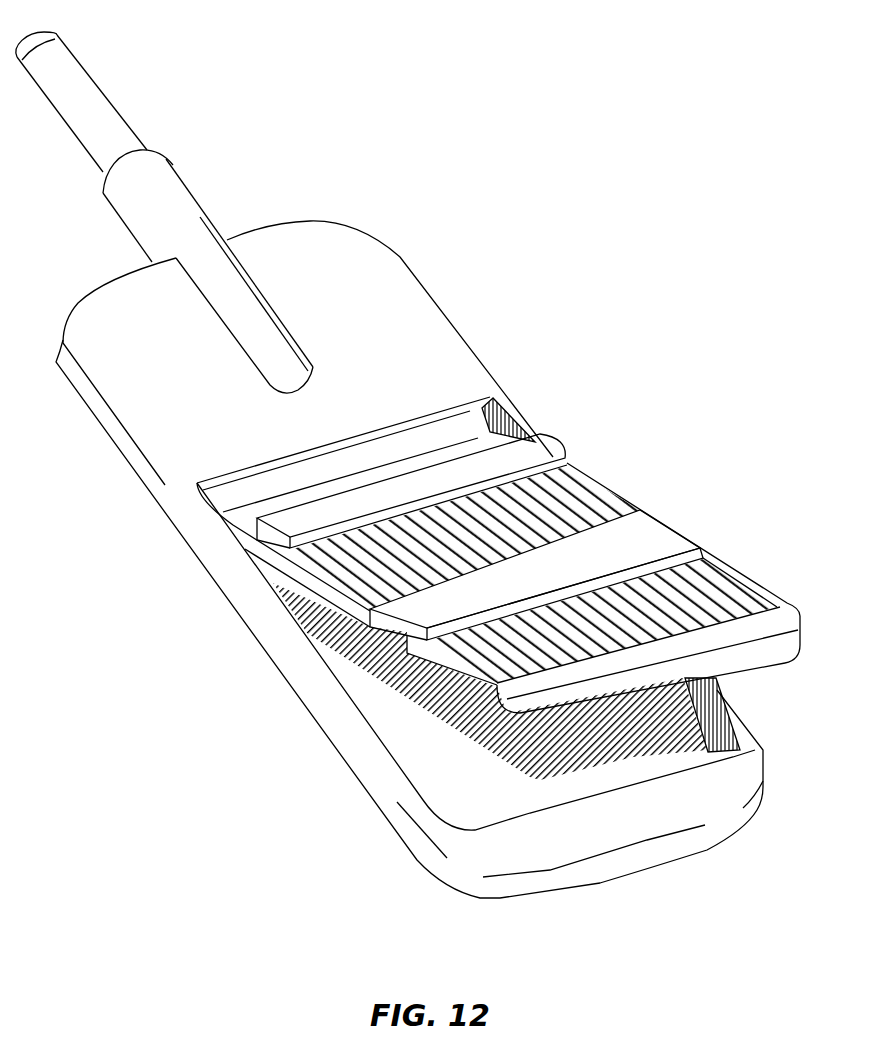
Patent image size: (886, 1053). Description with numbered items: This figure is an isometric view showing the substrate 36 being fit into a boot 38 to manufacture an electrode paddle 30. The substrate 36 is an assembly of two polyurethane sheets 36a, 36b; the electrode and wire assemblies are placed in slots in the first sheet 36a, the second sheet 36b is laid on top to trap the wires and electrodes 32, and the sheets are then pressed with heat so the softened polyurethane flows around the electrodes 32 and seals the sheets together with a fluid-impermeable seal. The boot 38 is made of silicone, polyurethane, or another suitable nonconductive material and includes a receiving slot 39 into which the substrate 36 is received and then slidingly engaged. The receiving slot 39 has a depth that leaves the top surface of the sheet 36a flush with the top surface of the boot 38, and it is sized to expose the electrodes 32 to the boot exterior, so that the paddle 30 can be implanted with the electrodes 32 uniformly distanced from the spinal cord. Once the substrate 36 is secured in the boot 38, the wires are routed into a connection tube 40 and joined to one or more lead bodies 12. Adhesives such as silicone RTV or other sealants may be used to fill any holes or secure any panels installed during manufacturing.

The lead body 12 is at (62, 66).
The connection tube 40 is at (138, 205).
The paddle 30 is at (600, 267).
The electrodes 32 is at (548, 487).
The substrate 36 is at (805, 600).
The sheet 36a is at (643, 540).
The sheet 36b is at (753, 667).
The boot 38 is at (505, 850).
The receiving slot 39 is at (437, 743).